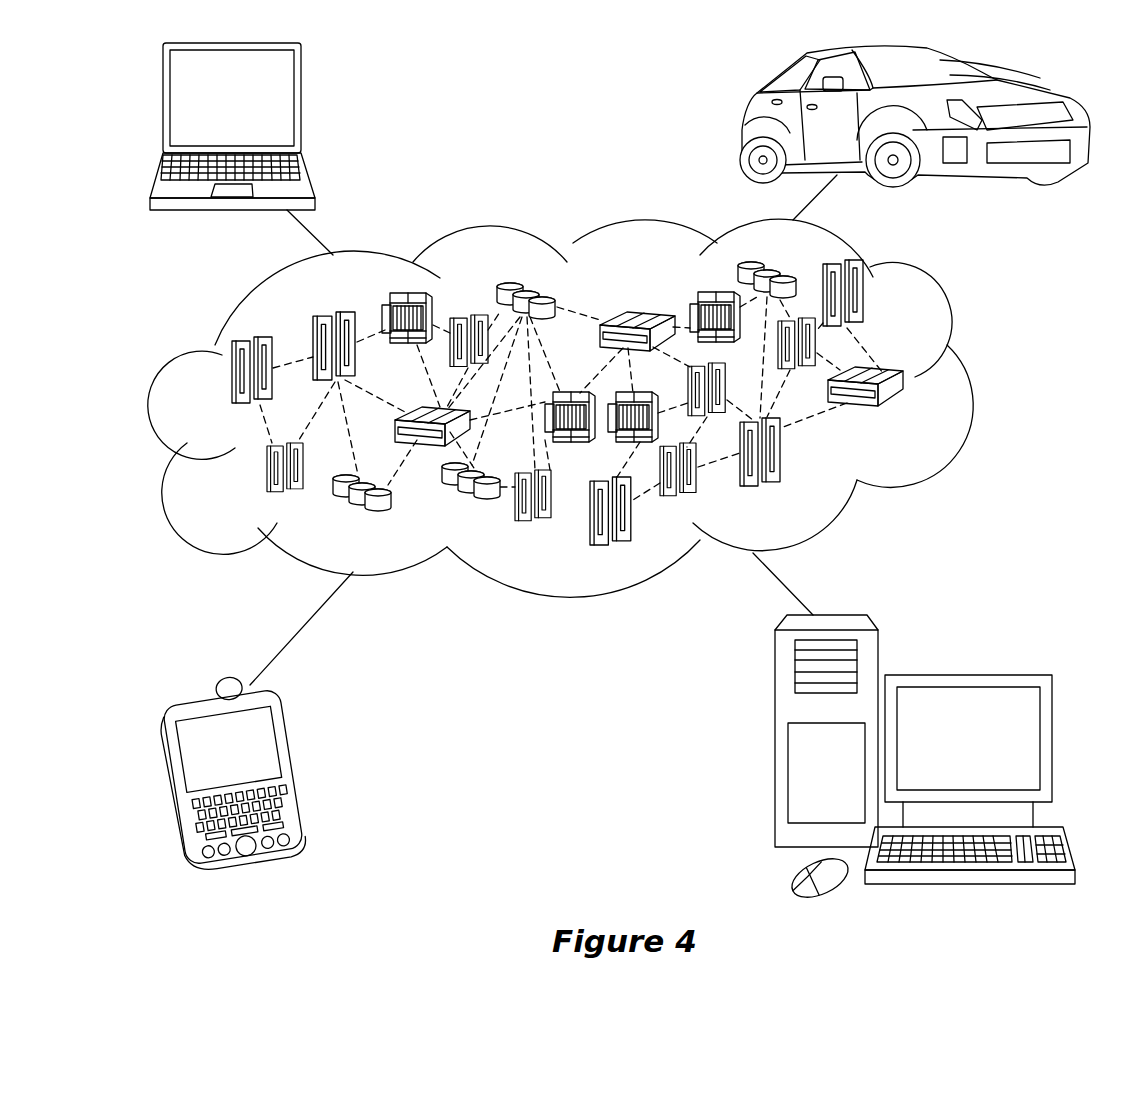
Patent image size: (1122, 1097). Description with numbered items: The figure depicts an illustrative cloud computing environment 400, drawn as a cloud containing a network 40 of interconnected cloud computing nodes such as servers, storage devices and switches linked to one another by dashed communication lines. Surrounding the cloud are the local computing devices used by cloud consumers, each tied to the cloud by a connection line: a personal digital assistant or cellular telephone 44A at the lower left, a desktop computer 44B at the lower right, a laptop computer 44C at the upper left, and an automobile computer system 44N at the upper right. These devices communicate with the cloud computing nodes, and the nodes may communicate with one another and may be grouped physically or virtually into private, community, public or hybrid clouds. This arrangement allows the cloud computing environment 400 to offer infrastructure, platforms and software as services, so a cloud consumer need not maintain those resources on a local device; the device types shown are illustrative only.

The network 40 is at (968, 382).
The cloud computing environment 400 is at (914, 414).
The personal digital assistant (PDA) or cellular telephone 44A is at (292, 768).
The desktop computer 44B is at (965, 673).
The laptop computer 44C is at (303, 105).
The automobile computer system 44N is at (745, 120).